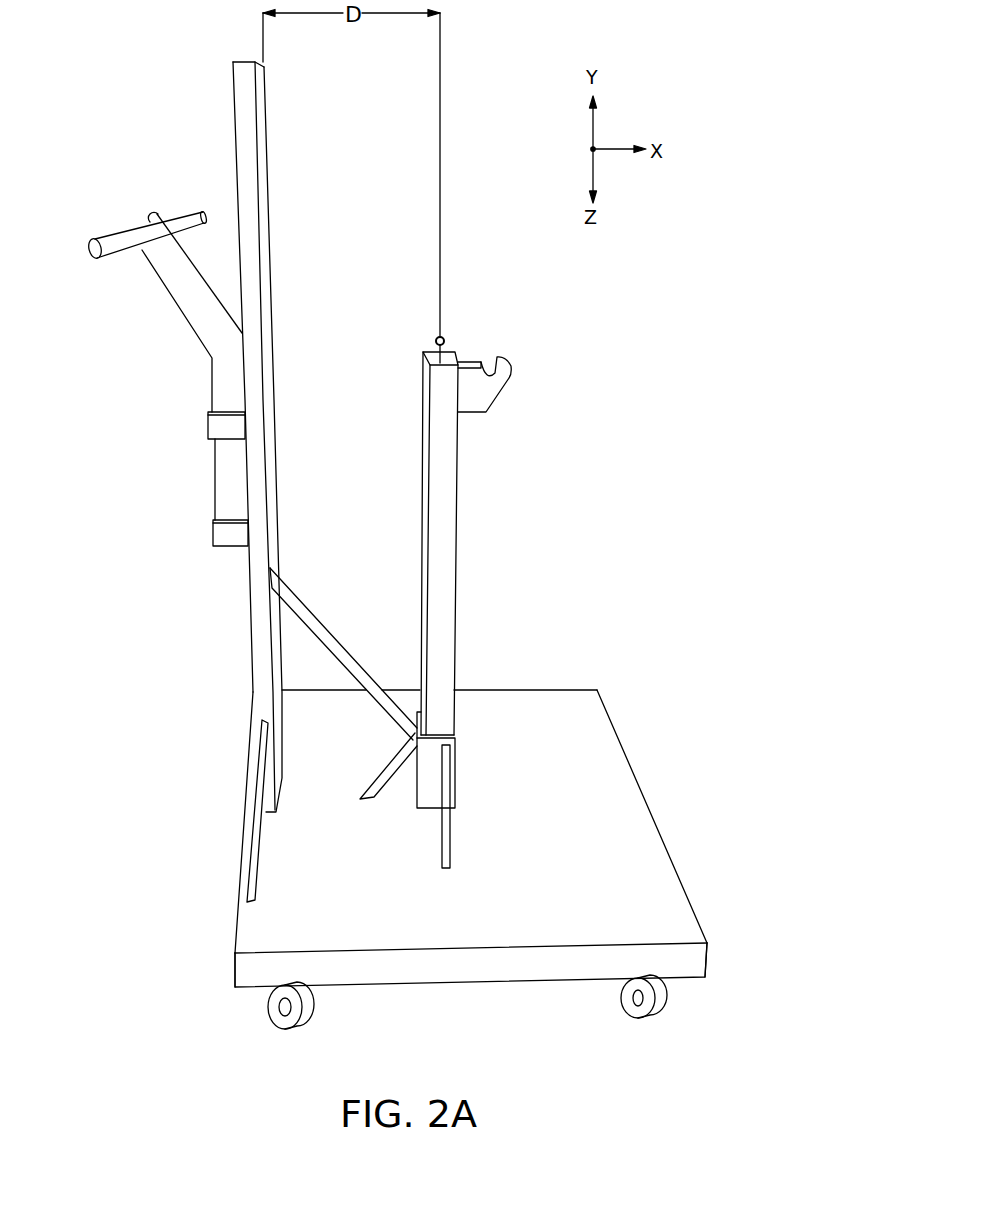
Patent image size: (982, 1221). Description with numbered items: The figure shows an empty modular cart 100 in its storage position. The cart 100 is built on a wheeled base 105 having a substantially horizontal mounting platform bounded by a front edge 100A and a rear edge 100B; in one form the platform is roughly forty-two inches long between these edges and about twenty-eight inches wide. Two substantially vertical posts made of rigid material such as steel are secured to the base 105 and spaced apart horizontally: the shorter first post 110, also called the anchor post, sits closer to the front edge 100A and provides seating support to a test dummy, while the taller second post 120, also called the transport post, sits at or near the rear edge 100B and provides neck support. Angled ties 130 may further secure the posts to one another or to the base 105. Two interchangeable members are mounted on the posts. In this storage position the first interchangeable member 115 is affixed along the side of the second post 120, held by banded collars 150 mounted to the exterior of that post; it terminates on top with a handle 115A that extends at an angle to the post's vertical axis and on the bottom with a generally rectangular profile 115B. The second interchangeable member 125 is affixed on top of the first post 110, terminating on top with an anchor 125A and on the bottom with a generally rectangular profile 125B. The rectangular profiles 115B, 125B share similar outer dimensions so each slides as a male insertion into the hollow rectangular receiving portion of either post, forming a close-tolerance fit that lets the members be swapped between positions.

The modular cart 100 is at (433, 545).
The front edge 100A is at (707, 962).
The rear edge 100B is at (232, 973).
The wheeled base 105 is at (632, 845).
The first post 110 is at (456, 780).
The first interchangeable member 115 is at (173, 300).
The handle 115A is at (121, 231).
The generally rectangular profile 115B is at (215, 480).
The second post 120 is at (250, 612).
The second interchangeable member 125 is at (458, 495).
The anchor 125A is at (511, 380).
The generally rectangular profile 125B is at (441, 632).
The angled ties 130 is at (347, 646).
The banded collars 150 is at (208, 425).